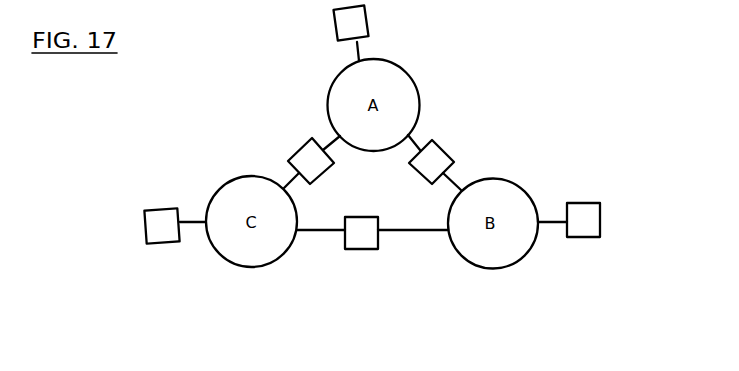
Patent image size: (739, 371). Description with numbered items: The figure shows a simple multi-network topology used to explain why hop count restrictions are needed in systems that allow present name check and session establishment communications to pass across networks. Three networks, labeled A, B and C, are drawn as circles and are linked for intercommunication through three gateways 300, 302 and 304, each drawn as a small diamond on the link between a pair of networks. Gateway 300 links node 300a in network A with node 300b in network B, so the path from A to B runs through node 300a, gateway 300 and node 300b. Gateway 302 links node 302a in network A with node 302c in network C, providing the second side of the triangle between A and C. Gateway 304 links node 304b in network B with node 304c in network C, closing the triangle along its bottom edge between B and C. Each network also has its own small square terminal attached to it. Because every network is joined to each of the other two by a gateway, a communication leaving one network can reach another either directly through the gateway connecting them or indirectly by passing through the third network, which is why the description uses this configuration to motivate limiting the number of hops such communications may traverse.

The gateway 300 is at (443, 147).
The node 300a is at (415, 133).
The node 300b is at (463, 183).
The gateway 302 is at (303, 147).
The node 302a is at (333, 137).
The node 302c is at (203, 214).
The gateway 304 is at (360, 248).
The node 304c is at (300, 237).
The node 304b is at (443, 237).